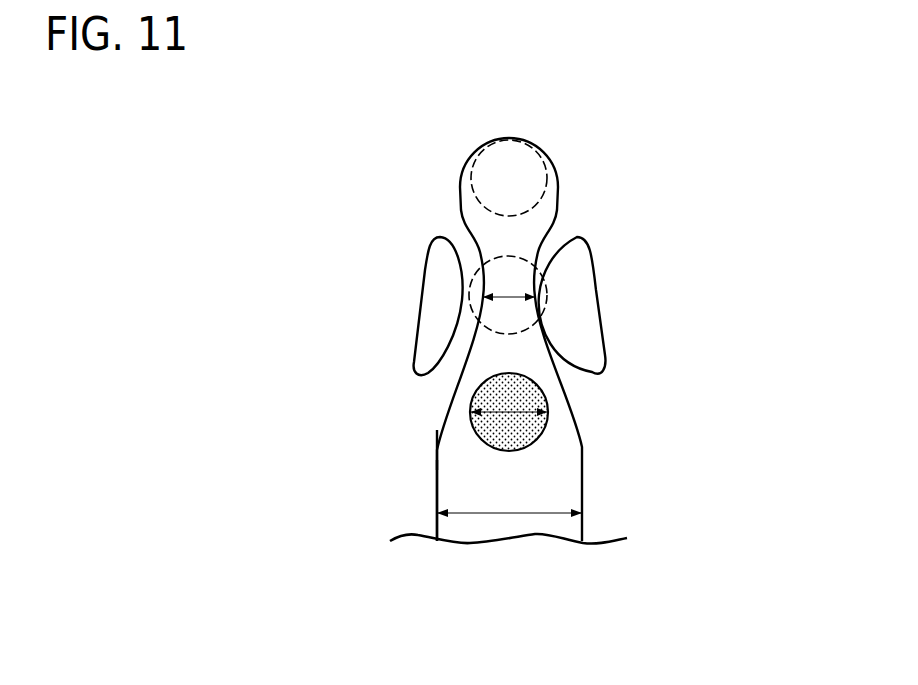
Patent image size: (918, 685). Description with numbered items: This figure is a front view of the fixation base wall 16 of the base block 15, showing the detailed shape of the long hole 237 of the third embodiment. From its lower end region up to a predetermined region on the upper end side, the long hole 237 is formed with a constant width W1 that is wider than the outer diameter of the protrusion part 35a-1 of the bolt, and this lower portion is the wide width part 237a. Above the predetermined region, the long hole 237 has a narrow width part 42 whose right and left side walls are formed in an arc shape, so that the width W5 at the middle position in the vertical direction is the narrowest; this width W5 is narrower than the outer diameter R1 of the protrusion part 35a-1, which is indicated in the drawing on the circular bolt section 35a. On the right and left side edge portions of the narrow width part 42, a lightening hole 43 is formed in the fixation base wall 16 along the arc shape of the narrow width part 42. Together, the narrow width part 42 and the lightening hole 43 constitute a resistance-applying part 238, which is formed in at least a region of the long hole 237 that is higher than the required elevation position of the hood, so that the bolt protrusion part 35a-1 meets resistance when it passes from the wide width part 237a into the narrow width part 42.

The fixation base wall 16 is at (433, 192).
The base block 15 is at (507, 320).
The protrusion part 35a-1 is at (635, 295).
The press-fit hole 35a is at (635, 295).
The narrow width part 42 is at (545, 277).
The resistance-applying part 238 is at (619, 276).
The lightening hole 43 is at (430, 288).
The long hole 237 is at (441, 462).
The wide width part 237a is at (437, 430).
The width of the narrow width part W5 is at (508, 298).
The width of the wide width part W1 is at (512, 518).
The outer diameter of the protrusion part R1 is at (512, 412).